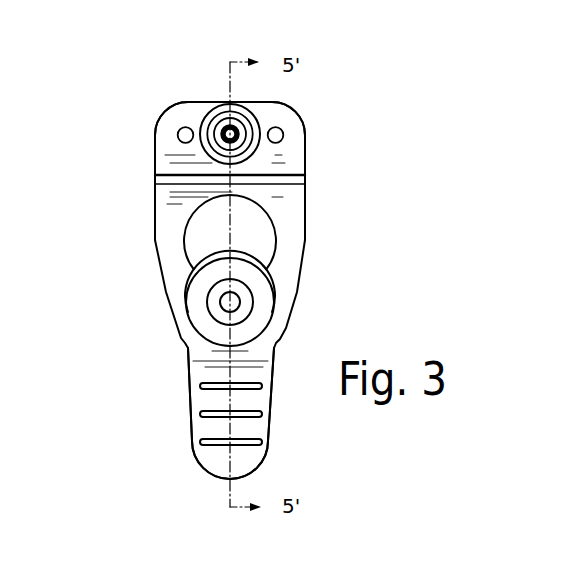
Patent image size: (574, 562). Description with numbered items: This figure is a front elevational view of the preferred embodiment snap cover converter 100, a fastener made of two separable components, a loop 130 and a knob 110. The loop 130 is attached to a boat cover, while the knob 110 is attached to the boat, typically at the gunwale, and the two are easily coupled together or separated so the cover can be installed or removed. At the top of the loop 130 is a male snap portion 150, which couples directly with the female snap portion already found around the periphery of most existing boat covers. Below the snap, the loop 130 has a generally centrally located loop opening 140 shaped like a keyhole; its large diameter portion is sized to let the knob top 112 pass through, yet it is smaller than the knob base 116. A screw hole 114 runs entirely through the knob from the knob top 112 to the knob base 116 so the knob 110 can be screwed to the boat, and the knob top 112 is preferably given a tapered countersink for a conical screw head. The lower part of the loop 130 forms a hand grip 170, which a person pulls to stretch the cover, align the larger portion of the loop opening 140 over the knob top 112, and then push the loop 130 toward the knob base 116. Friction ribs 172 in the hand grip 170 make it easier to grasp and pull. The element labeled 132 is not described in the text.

The snap cover converter 100 is at (147, 89).
The knob 110 is at (185, 295).
The knob top 112 is at (188, 314).
The screw hole 114 is at (241, 302).
The knob base 116 is at (256, 257).
The loop 130 is at (310, 162).
The housing seam 132 is at (157, 178).
The loop opening 140 is at (274, 220).
The male snap portion 150 is at (250, 124).
The hand grip 170 is at (211, 479).
The friction ribs 172 is at (262, 414).